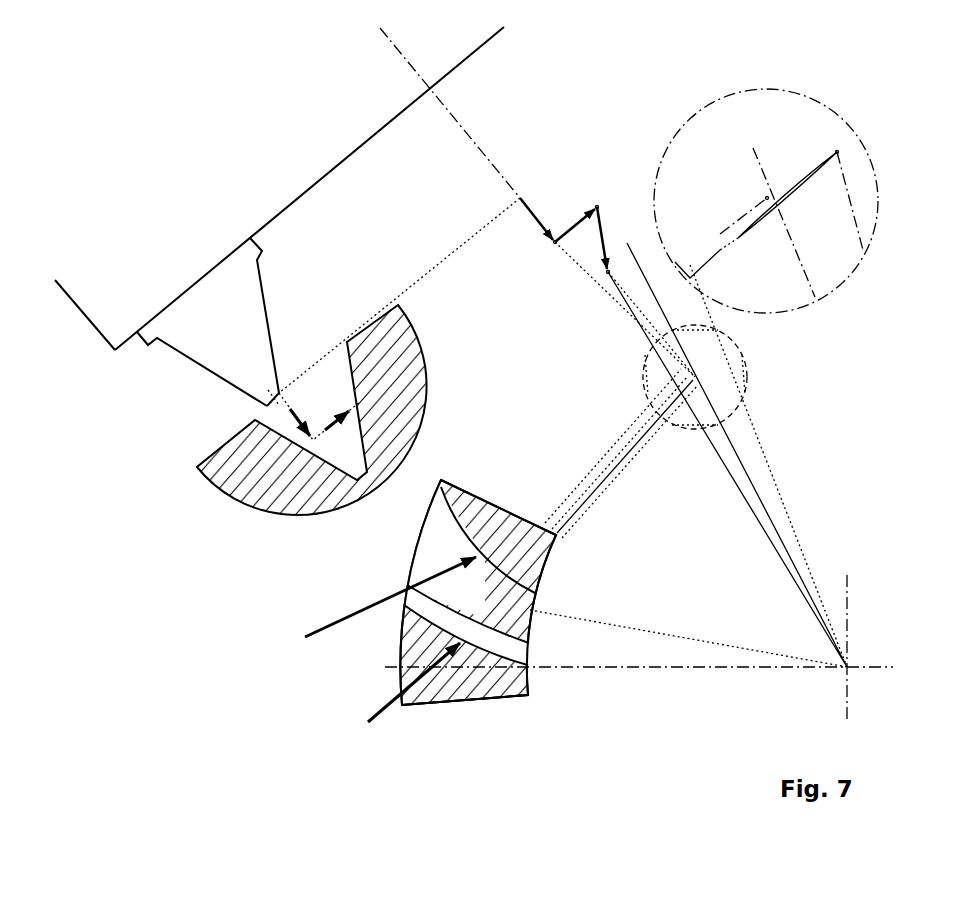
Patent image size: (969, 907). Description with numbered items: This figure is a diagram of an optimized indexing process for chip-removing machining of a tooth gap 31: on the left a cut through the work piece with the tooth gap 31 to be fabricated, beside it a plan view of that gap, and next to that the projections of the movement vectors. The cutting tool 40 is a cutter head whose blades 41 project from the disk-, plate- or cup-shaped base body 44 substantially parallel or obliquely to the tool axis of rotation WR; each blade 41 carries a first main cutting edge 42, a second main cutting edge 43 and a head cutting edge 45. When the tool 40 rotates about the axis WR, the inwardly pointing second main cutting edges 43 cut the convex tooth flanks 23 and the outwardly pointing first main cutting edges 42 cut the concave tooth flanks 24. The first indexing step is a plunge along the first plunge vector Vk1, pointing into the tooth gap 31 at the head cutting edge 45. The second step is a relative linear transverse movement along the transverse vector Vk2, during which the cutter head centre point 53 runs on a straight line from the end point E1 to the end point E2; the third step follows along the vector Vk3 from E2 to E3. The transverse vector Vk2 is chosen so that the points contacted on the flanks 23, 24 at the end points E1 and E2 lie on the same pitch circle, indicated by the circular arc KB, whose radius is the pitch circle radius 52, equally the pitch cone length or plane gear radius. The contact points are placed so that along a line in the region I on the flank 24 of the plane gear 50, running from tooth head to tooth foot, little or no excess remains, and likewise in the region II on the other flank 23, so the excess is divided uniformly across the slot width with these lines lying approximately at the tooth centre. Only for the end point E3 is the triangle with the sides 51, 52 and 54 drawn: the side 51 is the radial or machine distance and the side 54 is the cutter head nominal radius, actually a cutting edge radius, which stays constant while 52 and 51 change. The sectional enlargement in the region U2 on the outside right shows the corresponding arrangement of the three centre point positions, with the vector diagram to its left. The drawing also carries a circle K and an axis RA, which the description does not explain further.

The cutting tool 40 is at (139, 296).
The blade 41 is at (227, 334).
The first main cutting edge 42 is at (196, 364).
The second main cutting edge 43 is at (266, 311).
The base body 44 is at (82, 313).
The head cutting edge 45 is at (382, 319).
The plane gear 50 is at (466, 712).
The contour circle of dressing disc K is at (428, 345).
The tooth flank 23 is at (438, 492).
The tooth flank 24 is at (418, 570).
The tooth gap 31 is at (529, 643).
The circular arc KB is at (467, 707).
The region on flank 24 I is at (410, 700).
The region on flank 23 II is at (380, 611).
The tool axis of rotation WR is at (443, 100).
The first plunge vector Vk1 is at (533, 217).
The transverse vector Vk2 is at (565, 232).
The third indexing vector Vk3 is at (599, 237).
The end point E1 is at (555, 242).
The end point E2 is at (597, 207).
The end point E3 is at (608, 272).
The radial distance 51 is at (753, 487).
The pitch circle radius 52 is at (645, 632).
The cutter head centre point 53 is at (695, 377).
The cutter head radius 54 is at (593, 478).
The rotation axis RA is at (849, 668).
The sectional enlargement region U2 is at (853, 270).